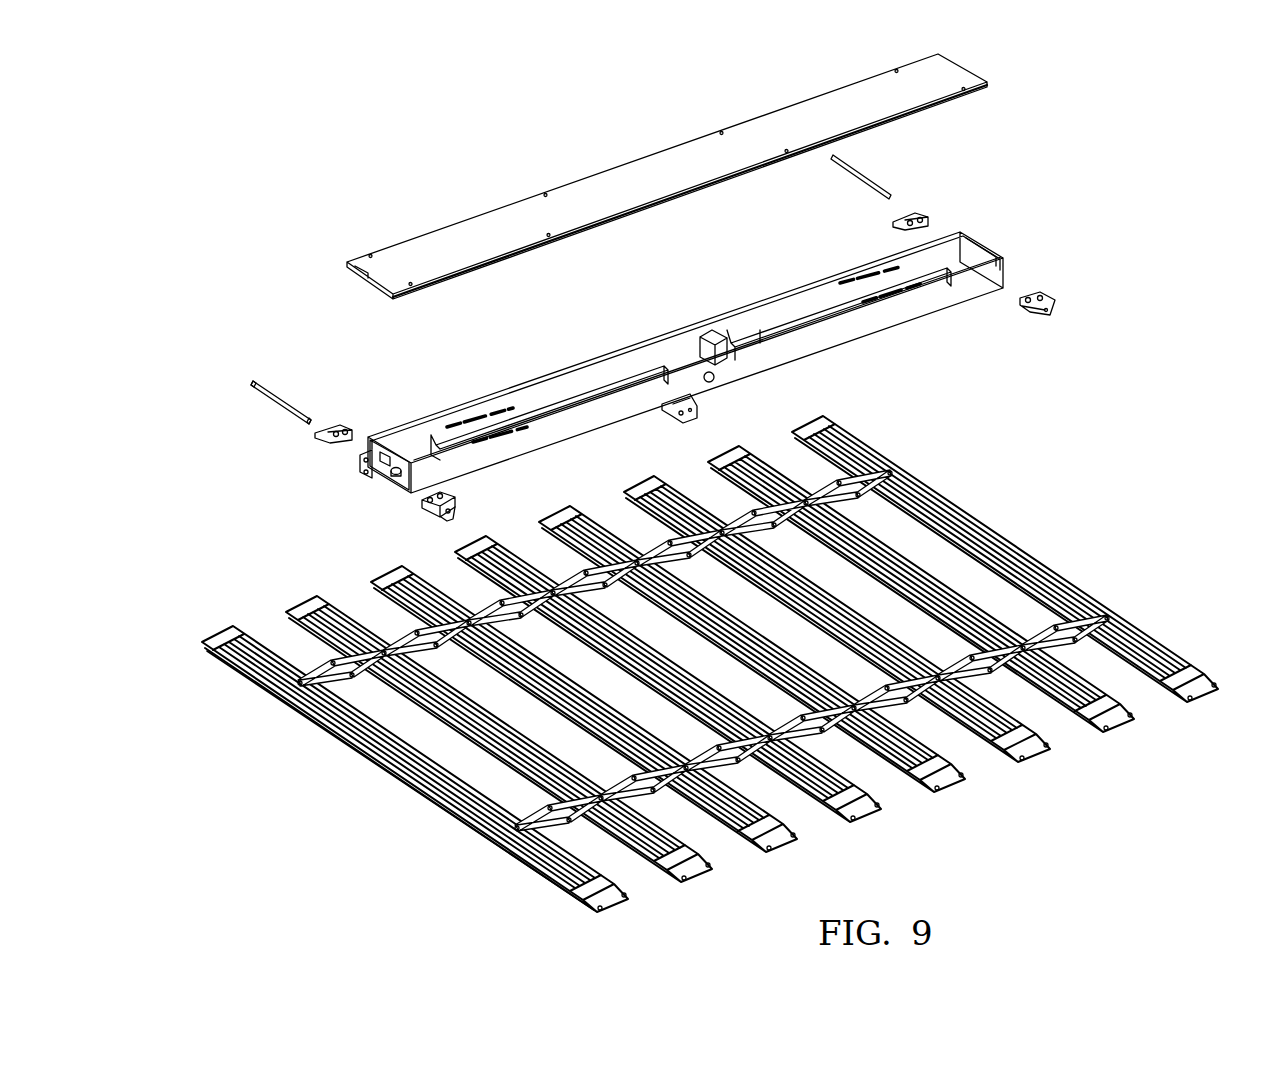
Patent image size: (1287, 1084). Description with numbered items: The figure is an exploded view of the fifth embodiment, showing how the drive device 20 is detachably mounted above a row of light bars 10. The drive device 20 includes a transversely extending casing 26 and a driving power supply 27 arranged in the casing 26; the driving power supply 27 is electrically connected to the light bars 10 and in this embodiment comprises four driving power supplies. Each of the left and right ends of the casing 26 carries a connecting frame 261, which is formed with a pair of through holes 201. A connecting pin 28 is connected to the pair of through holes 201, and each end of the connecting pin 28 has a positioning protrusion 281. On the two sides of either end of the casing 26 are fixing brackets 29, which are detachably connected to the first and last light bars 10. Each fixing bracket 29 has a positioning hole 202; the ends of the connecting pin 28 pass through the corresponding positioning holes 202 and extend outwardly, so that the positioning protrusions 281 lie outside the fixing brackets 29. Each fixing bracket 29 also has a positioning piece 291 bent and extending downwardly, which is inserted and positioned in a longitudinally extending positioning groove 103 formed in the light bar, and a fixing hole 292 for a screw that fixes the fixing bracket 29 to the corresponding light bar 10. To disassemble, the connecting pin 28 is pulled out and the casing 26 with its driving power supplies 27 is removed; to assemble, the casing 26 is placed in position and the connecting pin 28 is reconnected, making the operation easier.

The light bar 10 is at (1029, 560).
The positioning groove 103 is at (501, 838).
The drive device 20 is at (505, 218).
The casing 26 is at (560, 378).
The driving power supply 27 is at (460, 402).
The connecting pin 28 is at (273, 403).
The positioning protrusion 281 is at (307, 419).
The connecting frame 261 is at (380, 483).
The through hole 201 is at (402, 495).
The positioning hole 202 is at (444, 497).
The fixing bracket 29 is at (455, 507).
The positioning piece 291 is at (450, 513).
The fixing hole 292 is at (445, 522).